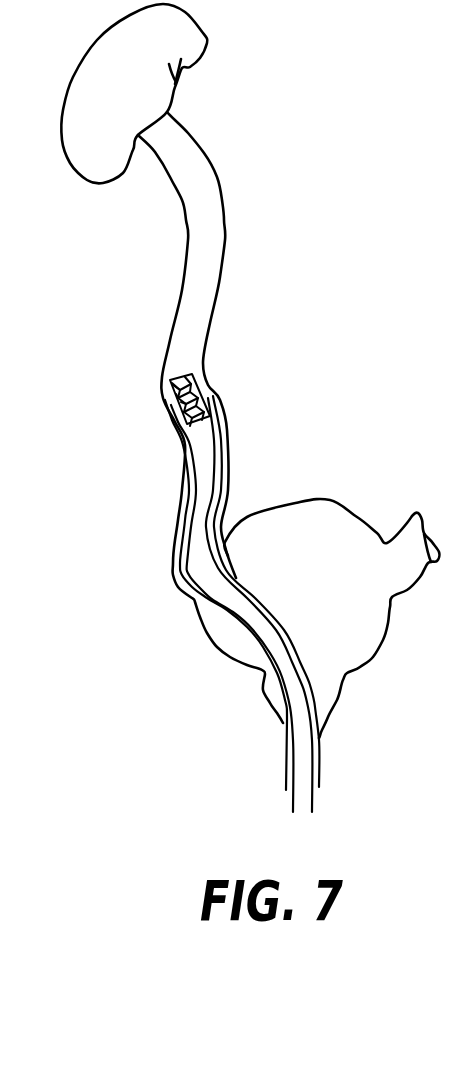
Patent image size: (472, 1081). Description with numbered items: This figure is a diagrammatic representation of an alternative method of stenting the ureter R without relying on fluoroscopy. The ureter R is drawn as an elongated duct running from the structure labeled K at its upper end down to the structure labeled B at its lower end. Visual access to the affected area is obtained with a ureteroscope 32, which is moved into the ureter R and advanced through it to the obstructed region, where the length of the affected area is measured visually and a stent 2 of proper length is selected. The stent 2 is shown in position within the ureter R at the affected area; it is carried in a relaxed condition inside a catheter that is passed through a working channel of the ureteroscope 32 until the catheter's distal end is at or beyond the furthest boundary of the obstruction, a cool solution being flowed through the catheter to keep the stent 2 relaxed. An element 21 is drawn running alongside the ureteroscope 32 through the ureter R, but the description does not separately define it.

The kidney K is at (97, 42).
The ureter R is at (222, 277).
The bladder B is at (342, 502).
The stent 2 is at (200, 393).
The ureteroscope 32 is at (226, 476).
The catheter 21 is at (185, 557).